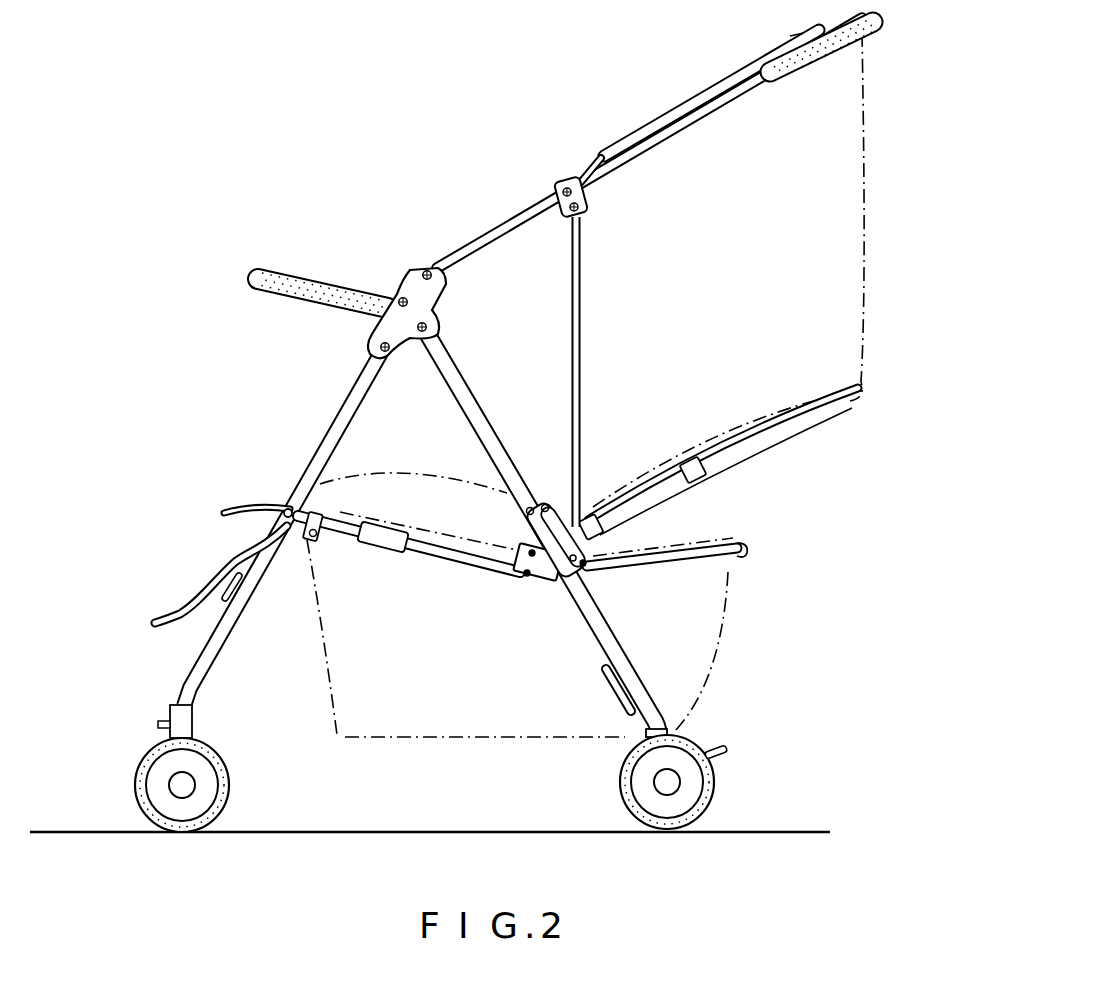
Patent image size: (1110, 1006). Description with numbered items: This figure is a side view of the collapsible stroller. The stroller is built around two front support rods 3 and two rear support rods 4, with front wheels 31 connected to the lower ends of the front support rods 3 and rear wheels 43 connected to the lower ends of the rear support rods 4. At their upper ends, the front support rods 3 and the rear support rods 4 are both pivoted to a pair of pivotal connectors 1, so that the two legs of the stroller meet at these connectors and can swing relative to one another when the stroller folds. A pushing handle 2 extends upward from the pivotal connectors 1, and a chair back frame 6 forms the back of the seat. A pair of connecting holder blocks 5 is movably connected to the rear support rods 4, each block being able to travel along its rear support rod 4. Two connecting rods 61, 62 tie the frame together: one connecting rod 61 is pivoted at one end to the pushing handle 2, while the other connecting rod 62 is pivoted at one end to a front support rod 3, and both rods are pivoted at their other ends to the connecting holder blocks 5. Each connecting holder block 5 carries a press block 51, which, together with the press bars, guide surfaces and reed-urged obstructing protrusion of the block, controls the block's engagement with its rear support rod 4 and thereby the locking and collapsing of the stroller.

The pivotal connector 1 is at (408, 285).
The pushing handle 2 is at (707, 110).
The front support rod 3 is at (316, 470).
The front wheel 31 is at (150, 757).
The rear support rod 4 is at (470, 403).
The rear wheel 43 is at (716, 783).
The connecting holder block 5 is at (567, 573).
The press block 51 is at (585, 560).
The chair back frame 6 is at (799, 416).
The connecting rod 61 is at (579, 327).
The connecting rod 62 is at (457, 553).